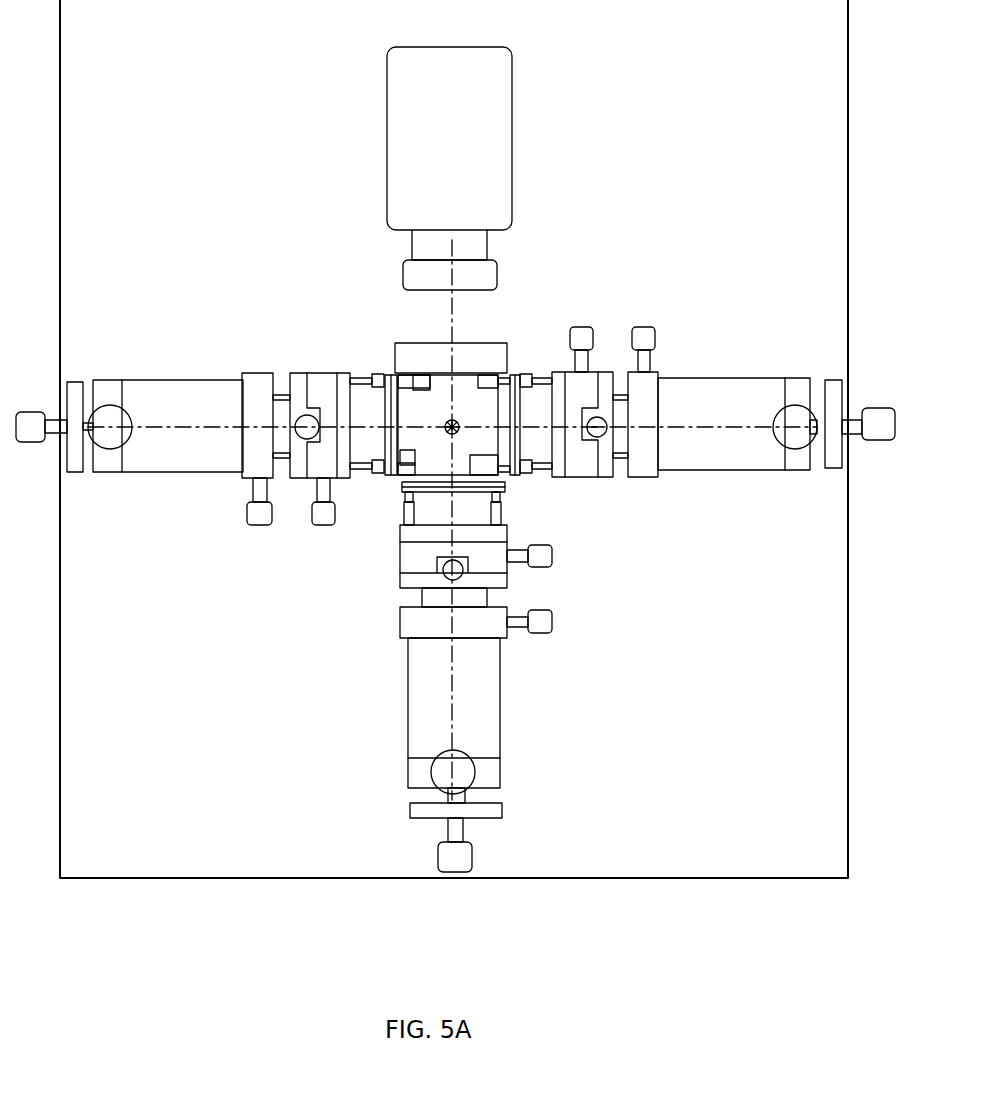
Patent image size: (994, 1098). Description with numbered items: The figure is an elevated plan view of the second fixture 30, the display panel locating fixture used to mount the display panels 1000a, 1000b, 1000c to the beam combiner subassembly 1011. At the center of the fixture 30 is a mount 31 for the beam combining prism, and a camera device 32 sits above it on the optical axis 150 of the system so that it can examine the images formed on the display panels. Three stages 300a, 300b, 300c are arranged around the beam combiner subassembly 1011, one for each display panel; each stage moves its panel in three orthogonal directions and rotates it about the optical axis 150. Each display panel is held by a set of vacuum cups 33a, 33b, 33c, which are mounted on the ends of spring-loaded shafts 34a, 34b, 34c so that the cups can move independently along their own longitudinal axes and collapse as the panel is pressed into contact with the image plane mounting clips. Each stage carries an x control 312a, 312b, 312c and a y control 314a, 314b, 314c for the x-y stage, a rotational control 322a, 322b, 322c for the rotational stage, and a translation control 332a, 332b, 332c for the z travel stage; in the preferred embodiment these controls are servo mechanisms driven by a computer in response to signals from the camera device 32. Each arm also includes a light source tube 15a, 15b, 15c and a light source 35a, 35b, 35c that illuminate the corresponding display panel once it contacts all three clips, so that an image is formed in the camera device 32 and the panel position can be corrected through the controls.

The second fixture 30 is at (751, 888).
The camera device 32 is at (380, 119).
The optical axis 150 is at (452, 342).
The beam combiner subassembly 1011 is at (347, 328).
The mount 31 is at (451, 339).
The display panel 1000b is at (387, 366).
The display panel 1000c is at (516, 364).
The display panel 1000a is at (517, 494).
The vacuum cups 33b is at (376, 468).
The vacuum cups 33c is at (527, 462).
The vacuum cups 33a is at (494, 497).
The spring-loaded shafts 34b is at (364, 471).
The spring-loaded shafts 34c is at (543, 385).
The spring-loaded shafts 34a is at (414, 512).
The stage 300b is at (183, 479).
The stage 300c is at (723, 405).
The stage 300a is at (425, 698).
The translation control 332b is at (30, 442).
The translation control 332c is at (878, 442).
The translation control 332a is at (460, 857).
The light source tube 15b is at (170, 427).
The light source tube 15c is at (680, 427).
The light source tube 15a is at (455, 720).
The light source 35b is at (108, 405).
The light source 35c is at (796, 403).
The light source 35a is at (475, 773).
The rotational control 322b is at (247, 510).
The rotational control 322c is at (645, 325).
The rotational control 322a is at (542, 633).
The y control 314b is at (295, 390).
The y control 314c is at (602, 433).
The y control 314a is at (445, 573).
The x control 312b is at (322, 525).
The x control 312c is at (579, 327).
The x control 312a is at (540, 567).